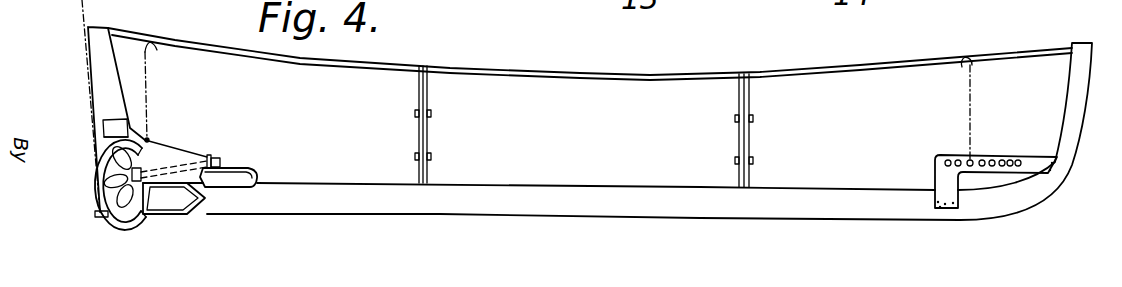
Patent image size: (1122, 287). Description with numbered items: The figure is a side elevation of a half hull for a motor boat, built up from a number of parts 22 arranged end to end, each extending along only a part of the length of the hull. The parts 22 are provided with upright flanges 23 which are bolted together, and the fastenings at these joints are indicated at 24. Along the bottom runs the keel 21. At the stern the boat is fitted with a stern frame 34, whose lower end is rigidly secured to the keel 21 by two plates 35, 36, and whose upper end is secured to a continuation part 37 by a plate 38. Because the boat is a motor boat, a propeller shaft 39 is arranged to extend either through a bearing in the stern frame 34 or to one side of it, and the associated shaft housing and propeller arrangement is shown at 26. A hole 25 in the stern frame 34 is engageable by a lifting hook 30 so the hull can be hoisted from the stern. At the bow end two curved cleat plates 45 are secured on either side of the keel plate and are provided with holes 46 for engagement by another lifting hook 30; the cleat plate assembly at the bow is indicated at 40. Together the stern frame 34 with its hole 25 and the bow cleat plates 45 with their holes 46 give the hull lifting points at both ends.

The keel 21 is at (316, 210).
The hull parts 22 is at (478, 85).
The upright flanges 23 is at (418, 132).
The stanchion bolts 24 is at (428, 157).
The hole 25 is at (150, 136).
The propeller shaft housing 26 is at (173, 173).
The lifting hook 30 is at (152, 88).
The stern frame 34 is at (110, 138).
The plate 35 is at (246, 170).
The plate 36 is at (197, 207).
The continuation part 37 is at (108, 75).
The plate 38 is at (115, 125).
The propeller shaft 39 is at (214, 156).
The bow bracket plate 40 is at (1053, 165).
The curved cleat plates 45 is at (1025, 157).
The holes 46 is at (1012, 157).